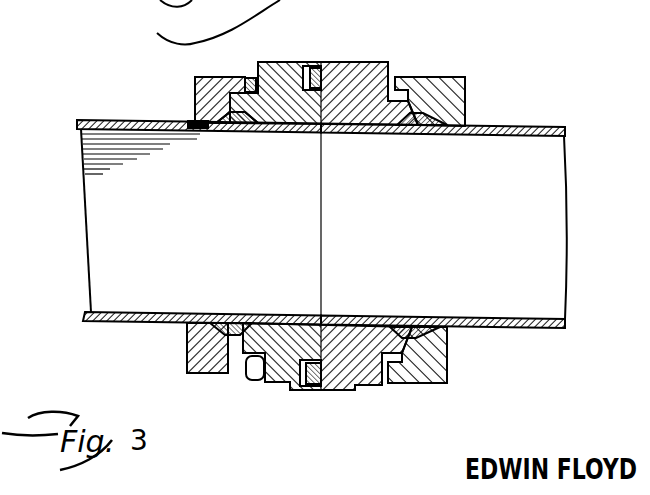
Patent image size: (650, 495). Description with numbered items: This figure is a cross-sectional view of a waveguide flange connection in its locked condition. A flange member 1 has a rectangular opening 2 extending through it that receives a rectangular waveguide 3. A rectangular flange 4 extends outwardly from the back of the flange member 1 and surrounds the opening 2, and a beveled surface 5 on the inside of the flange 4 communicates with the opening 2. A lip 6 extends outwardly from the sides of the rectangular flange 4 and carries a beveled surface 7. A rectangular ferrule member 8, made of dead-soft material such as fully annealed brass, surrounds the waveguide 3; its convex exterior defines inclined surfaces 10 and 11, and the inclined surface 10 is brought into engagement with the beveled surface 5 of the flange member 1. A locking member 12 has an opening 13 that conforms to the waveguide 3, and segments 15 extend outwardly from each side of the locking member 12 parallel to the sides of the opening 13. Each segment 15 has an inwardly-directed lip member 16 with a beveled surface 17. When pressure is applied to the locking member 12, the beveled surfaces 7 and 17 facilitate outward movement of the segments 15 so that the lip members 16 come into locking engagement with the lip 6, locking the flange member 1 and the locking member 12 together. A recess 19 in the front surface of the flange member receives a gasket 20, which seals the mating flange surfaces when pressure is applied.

The flange member 1 is at (297, 61).
The rectangular opening 2 is at (273, 130).
The rectangular waveguide 3 is at (95, 120).
The rectangular flange 4 is at (239, 79).
The beveled surface 5 is at (239, 322).
The lip 6 is at (227, 373).
The beveled surface 7 is at (205, 110).
The rectangular ferrule member 8 is at (233, 129).
The inclined surface 10 is at (259, 131).
The inclined surface 11 is at (215, 323).
The locking member 12 is at (195, 79).
The opening 13 is at (190, 124).
The segments 15 is at (236, 83).
The lip member 16 is at (247, 88).
The beveled surface 17 is at (268, 382).
The recess 19 is at (316, 68).
The gasket 20 is at (310, 386).